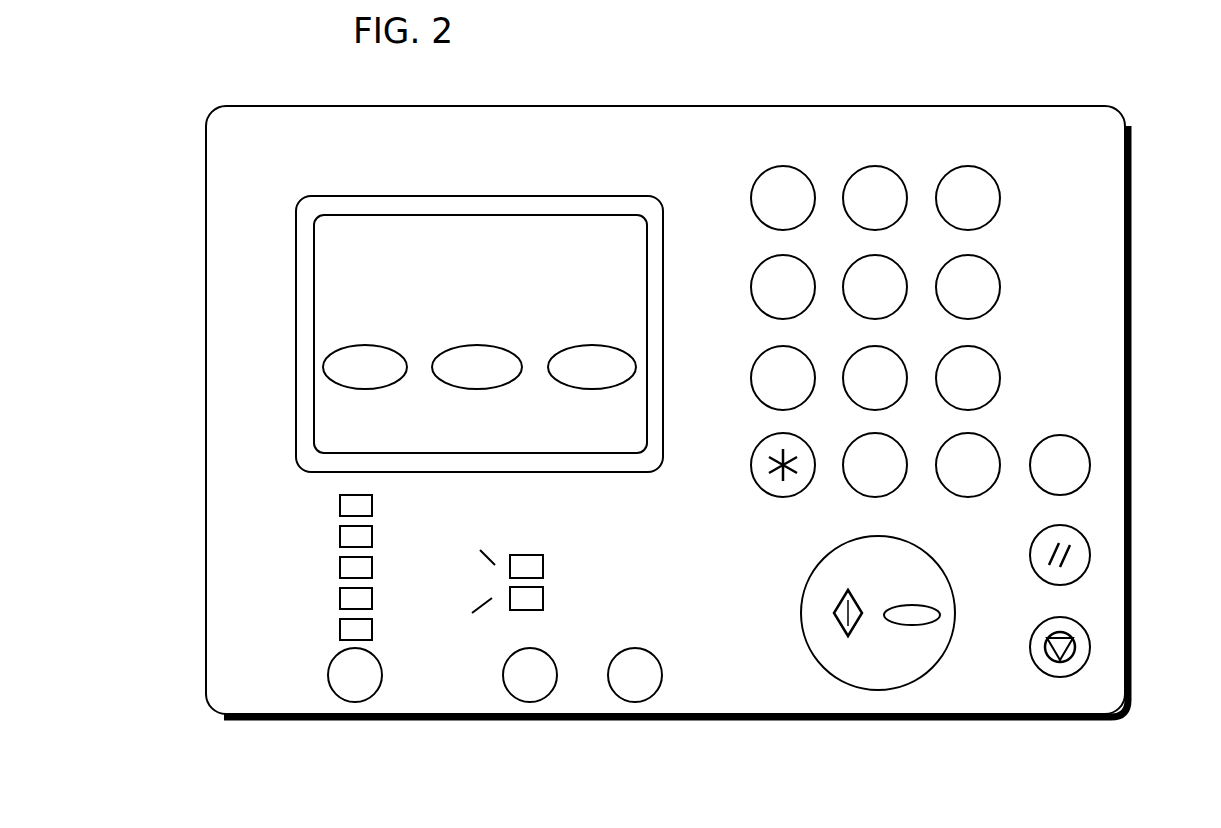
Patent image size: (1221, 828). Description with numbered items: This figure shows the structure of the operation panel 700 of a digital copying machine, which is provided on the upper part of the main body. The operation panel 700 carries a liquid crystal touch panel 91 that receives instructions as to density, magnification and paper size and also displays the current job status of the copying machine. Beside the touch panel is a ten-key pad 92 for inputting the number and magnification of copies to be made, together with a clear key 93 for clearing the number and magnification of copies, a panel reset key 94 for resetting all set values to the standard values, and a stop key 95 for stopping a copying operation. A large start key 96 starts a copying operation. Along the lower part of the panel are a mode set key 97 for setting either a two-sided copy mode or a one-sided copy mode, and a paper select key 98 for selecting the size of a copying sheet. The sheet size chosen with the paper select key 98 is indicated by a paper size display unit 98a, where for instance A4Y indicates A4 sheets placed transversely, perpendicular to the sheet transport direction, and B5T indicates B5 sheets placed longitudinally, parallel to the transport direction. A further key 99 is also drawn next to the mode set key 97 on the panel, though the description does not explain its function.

The operation panel 700 is at (534, 107).
The liquid crystal touch panel 91 is at (562, 215).
The 10-key pad 92 is at (880, 125).
The clear key 93 is at (1085, 446).
The panel reset key 94 is at (1085, 536).
The stop key 95 is at (1085, 641).
The start key 96 is at (883, 690).
The mode set key 97 is at (530, 690).
The paper select key 98 is at (355, 690).
The paper size display unit 98a is at (378, 493).
The key 99 is at (635, 690).